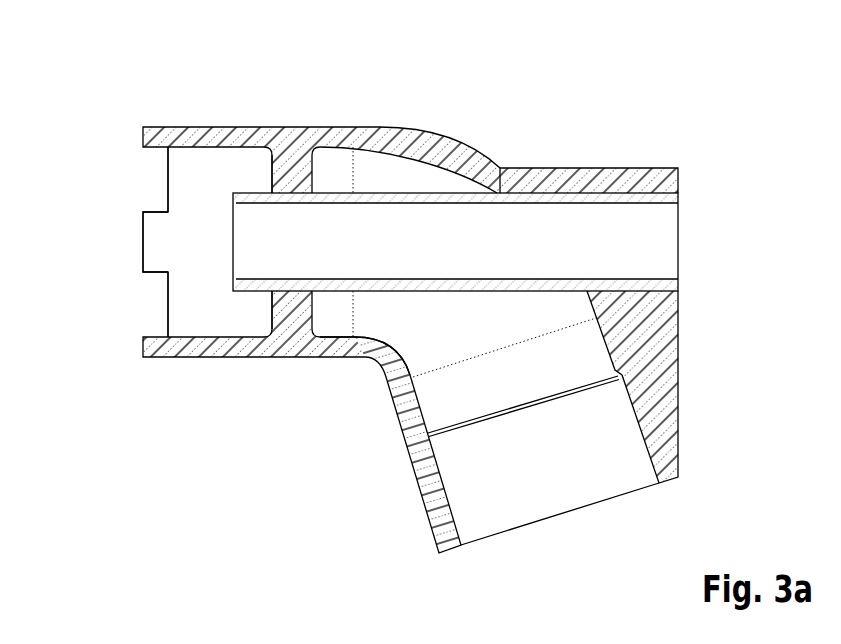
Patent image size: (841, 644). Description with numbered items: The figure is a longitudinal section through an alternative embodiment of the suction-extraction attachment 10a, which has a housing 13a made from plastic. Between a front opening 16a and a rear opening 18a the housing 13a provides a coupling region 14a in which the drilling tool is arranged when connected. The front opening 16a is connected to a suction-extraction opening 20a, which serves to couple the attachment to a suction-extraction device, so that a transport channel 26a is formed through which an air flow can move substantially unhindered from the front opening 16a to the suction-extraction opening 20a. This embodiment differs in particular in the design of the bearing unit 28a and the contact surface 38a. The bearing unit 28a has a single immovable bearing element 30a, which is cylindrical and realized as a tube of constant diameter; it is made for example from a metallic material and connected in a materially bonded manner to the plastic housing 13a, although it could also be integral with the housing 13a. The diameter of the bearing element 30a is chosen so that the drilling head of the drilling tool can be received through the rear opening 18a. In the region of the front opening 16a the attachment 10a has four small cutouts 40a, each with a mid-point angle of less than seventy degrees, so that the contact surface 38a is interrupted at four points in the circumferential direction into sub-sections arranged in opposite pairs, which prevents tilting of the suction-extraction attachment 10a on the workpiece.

The suction-extraction attachment 10a is at (452, 106).
The housing 13a is at (592, 177).
The coupling region 14a is at (511, 190).
The front opening 16a is at (128, 314).
The rear opening 18a is at (678, 238).
The suction-extraction opening 20a is at (397, 500).
The transport channel 26a is at (408, 335).
The bearing unit 28a is at (243, 170).
The bearing element 30a is at (132, 234).
The contact surface 38a is at (144, 139).
The cutouts 40a is at (155, 182).